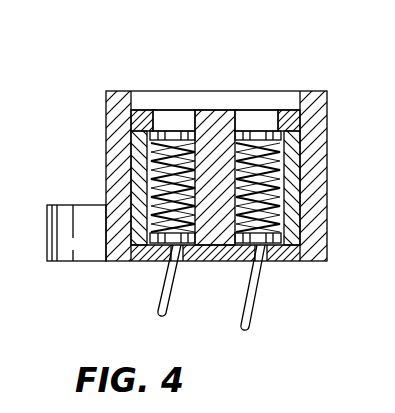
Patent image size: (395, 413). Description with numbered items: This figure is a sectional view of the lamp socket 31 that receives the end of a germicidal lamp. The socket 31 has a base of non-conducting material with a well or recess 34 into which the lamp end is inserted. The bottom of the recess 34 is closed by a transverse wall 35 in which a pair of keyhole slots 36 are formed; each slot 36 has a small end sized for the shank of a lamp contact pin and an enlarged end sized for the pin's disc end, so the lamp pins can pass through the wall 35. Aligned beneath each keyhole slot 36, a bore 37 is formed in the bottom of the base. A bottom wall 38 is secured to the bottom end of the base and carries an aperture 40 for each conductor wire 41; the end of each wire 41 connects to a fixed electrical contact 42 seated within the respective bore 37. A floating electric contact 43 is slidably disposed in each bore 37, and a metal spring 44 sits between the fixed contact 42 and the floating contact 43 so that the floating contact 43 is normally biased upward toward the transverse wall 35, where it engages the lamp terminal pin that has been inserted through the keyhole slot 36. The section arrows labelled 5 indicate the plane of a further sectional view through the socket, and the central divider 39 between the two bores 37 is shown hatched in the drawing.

The socket 31 is at (328, 123).
The recess 34 is at (188, 100).
The transverse wall 35 is at (140, 111).
The keyhole slot 36 is at (167, 120).
The bore 37 is at (131, 145).
The bottom wall 38 is at (293, 262).
The central partition 39 is at (217, 263).
The aperture 40 is at (170, 248).
The conductor wire 41 is at (157, 302).
The electrical contact 42 is at (289, 233).
The floating electric contact 43 is at (263, 138).
The metal spring 44 is at (160, 190).
The section line 5- 5 is at (259, 101).